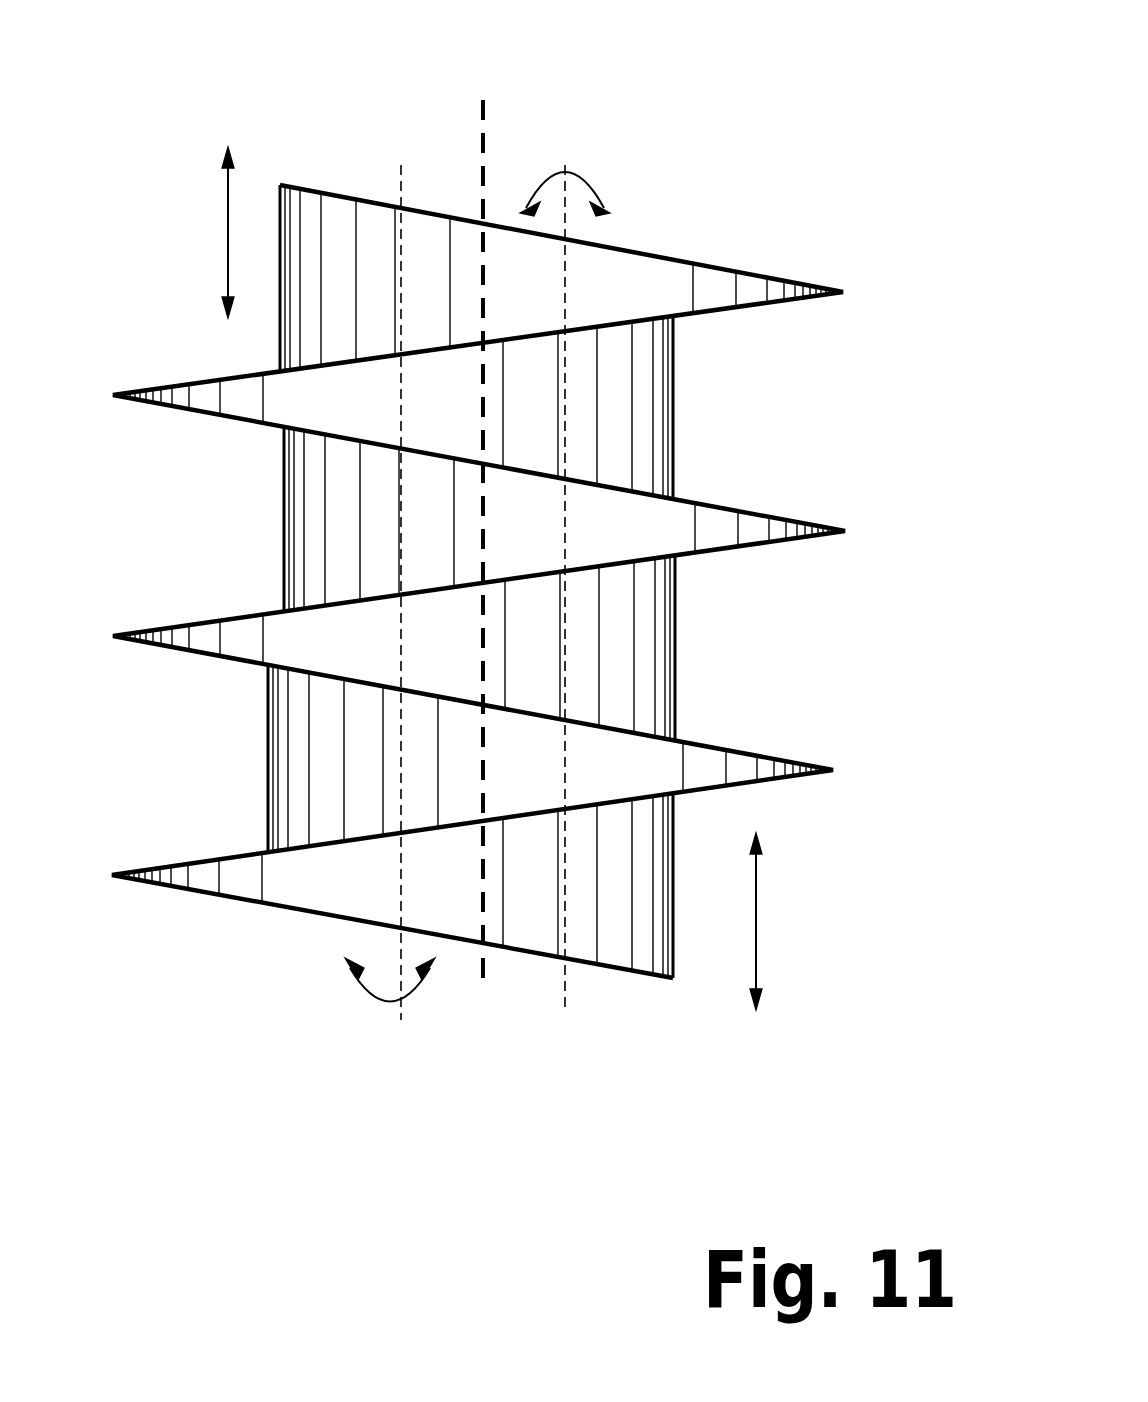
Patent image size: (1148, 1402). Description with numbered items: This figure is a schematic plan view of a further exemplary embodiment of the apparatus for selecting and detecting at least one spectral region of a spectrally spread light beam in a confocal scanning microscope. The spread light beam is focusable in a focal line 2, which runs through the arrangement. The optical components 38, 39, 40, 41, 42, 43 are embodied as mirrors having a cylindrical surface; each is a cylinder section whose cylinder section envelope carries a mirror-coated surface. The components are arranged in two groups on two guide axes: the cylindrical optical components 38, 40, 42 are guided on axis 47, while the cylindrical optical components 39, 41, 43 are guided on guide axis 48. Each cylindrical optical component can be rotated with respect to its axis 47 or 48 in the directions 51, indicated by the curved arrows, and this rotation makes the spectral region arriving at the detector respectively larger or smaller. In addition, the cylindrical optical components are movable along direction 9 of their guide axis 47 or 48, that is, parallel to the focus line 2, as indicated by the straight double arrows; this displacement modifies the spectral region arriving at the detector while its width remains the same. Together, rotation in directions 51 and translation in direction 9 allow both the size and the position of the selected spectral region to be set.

The focal line 2 is at (481, 1005).
The direction 9 is at (228, 232).
The optical component 38 is at (523, 284).
The optical component 39 is at (578, 452).
The optical component 40 is at (342, 532).
The optical component 41 is at (573, 657).
The optical component 42 is at (605, 760).
The optical component 43 is at (343, 877).
The axis 47 is at (565, 988).
The guide axis 48 is at (395, 1022).
The directions 51 is at (585, 175).